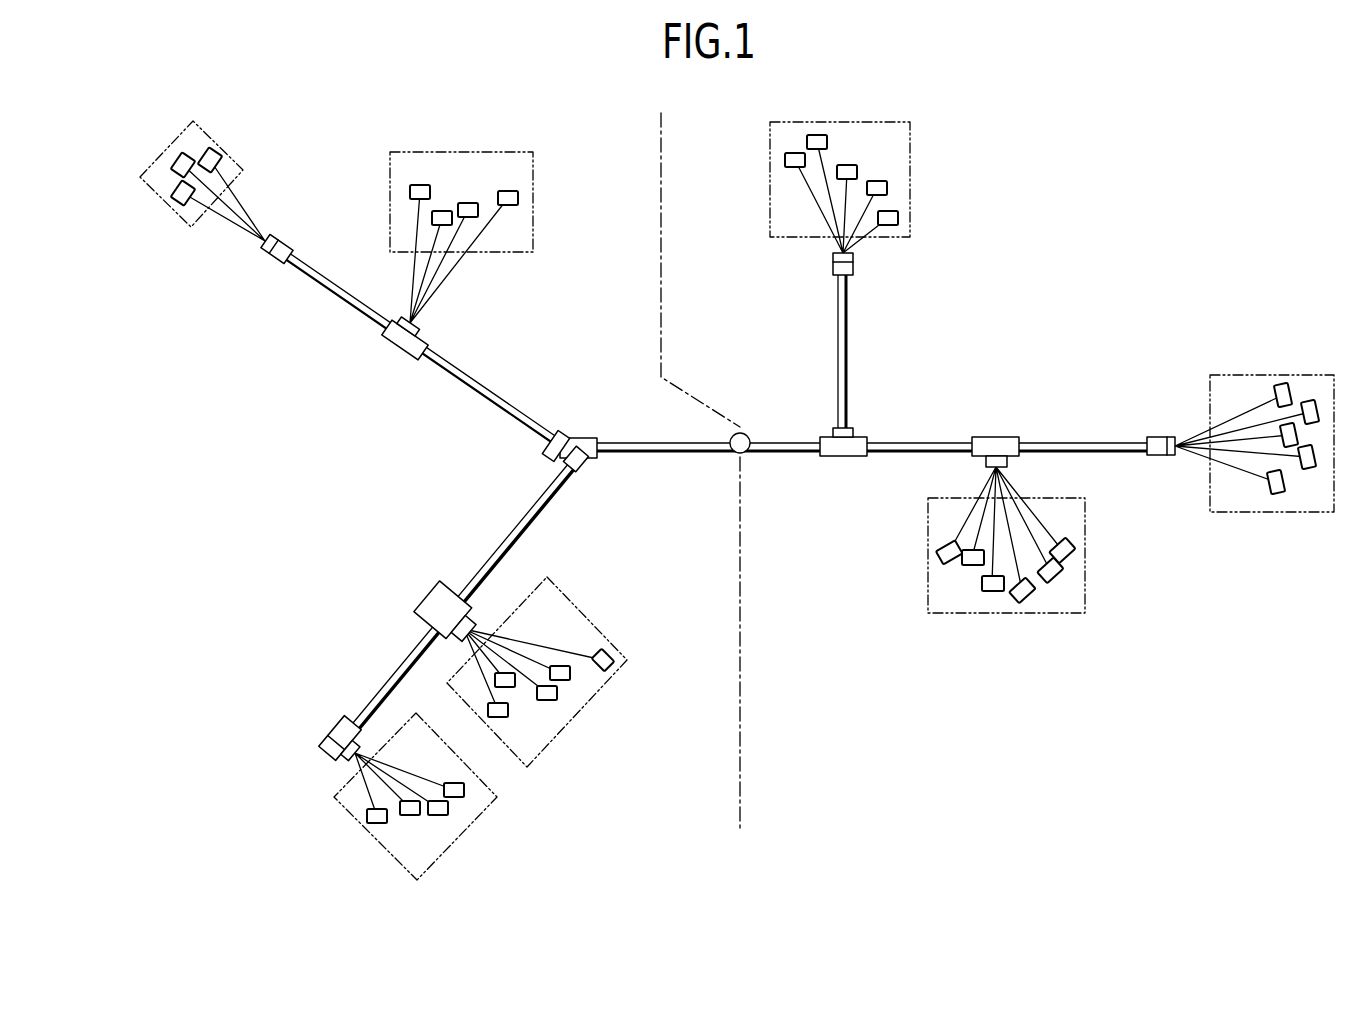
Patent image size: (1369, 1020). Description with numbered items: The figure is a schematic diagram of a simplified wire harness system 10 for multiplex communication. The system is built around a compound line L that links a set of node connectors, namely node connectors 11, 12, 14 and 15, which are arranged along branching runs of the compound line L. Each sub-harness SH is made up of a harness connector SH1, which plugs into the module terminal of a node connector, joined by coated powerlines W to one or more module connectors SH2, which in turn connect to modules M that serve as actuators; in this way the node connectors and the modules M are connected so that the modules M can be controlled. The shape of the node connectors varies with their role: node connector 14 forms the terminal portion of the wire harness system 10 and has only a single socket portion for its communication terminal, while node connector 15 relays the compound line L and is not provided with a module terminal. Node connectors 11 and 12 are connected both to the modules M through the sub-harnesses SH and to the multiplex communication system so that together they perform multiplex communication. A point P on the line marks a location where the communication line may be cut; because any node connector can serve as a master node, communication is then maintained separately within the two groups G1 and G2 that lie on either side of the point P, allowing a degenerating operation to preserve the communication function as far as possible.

The wire harness system 10 is at (1133, 238).
The node connector 11 is at (448, 578).
The node connector 12 is at (398, 352).
The node connector 14 is at (290, 248).
The node connector 15 is at (588, 464).
The compound line L is at (470, 384).
The point P is at (745, 433).
The module M is at (218, 138).
The coated powerline W is at (240, 200).
The sub-harness SH is at (731, 495).
The harness connector SH1 is at (268, 258).
The module connector SH2 is at (190, 200).
The group G1 is at (661, 143).
The group G2 is at (663, 153).